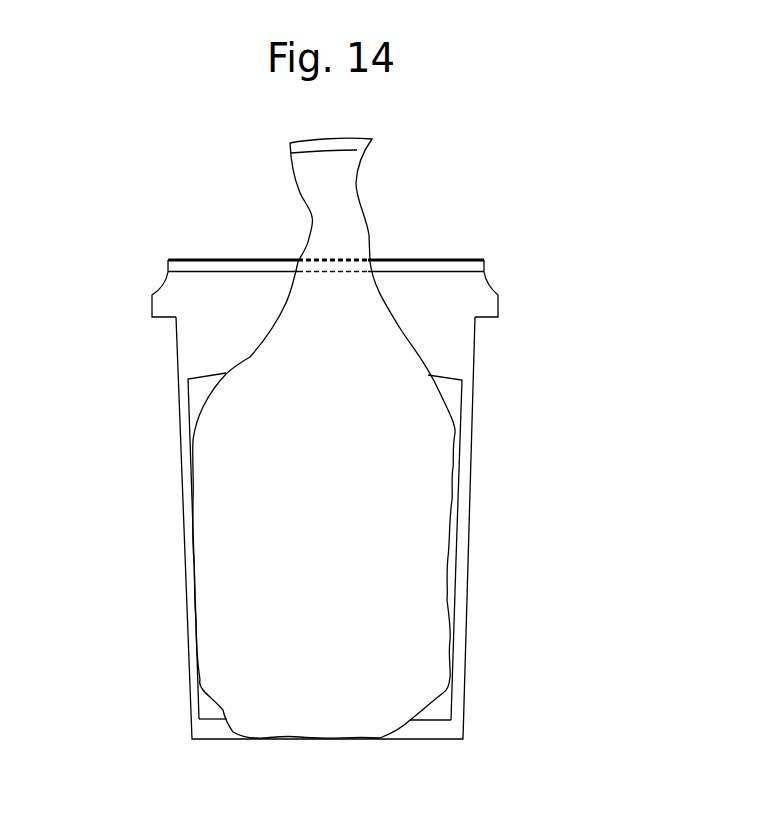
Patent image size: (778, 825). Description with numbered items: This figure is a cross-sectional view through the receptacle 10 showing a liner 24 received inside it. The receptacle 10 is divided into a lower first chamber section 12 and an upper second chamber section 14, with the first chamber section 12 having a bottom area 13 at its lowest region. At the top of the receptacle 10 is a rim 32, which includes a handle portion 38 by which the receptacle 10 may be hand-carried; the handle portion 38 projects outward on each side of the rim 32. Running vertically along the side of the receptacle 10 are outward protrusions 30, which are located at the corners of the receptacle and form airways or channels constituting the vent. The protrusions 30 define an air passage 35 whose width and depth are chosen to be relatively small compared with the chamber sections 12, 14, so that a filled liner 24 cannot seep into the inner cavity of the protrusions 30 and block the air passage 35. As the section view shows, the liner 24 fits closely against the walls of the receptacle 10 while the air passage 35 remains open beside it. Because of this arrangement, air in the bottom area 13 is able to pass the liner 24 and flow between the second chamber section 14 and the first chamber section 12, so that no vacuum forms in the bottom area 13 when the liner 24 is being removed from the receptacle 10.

The receptacle 10 is at (614, 238).
The first chamber section 12 is at (143, 649).
The bottom area 13 is at (450, 718).
The second chamber section 14 is at (126, 354).
The liner 24 is at (357, 188).
The outward protrusions 30 is at (177, 455).
The rim 32 is at (453, 259).
The air passage 35 is at (193, 557).
The handle portion 38 is at (152, 295).